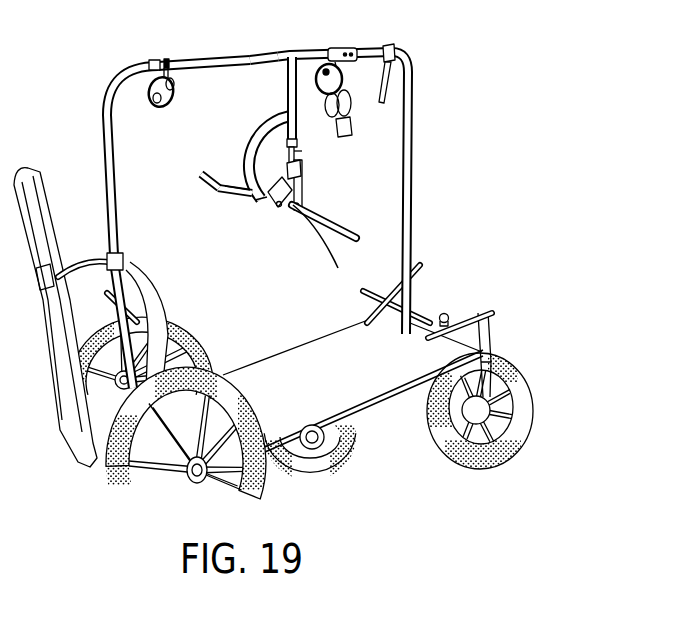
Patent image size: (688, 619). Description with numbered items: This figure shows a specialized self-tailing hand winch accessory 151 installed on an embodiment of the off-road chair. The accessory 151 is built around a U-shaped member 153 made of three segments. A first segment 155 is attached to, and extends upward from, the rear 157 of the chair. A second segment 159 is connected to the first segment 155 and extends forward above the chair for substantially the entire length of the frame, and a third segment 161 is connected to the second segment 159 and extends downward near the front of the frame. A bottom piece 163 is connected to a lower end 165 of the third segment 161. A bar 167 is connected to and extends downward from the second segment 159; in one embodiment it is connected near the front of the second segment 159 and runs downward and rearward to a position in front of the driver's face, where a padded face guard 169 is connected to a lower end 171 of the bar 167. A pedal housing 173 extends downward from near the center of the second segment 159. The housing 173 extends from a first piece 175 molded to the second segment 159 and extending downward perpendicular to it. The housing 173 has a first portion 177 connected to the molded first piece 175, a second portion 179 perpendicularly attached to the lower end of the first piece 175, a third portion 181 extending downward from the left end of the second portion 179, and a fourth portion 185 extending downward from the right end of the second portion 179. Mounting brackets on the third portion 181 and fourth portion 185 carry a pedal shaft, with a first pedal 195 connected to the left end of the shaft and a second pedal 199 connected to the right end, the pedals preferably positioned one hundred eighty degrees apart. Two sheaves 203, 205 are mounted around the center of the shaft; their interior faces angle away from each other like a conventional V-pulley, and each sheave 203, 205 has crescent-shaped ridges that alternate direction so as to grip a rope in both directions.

The accessory 151 is at (270, 27).
The U-shaped member 153 is at (283, 47).
The first segment 155 is at (100, 108).
The rear 157 is at (98, 242).
The second segment 159 is at (232, 60).
The third segment 161 is at (413, 103).
The bottom piece 163 is at (432, 311).
The lower end 165 is at (414, 294).
The bar 167 is at (298, 130).
The padded face guard 169 is at (258, 162).
The lower end 171 is at (278, 131).
The pedal housing 173 is at (300, 153).
The first piece 175 is at (287, 82).
The first portion 177 is at (303, 167).
The second portion 179 is at (304, 192).
The third portion 181 is at (216, 172).
The fourth portion 185 is at (330, 245).
The first pedal 195 is at (238, 196).
The second pedal 199 is at (350, 237).
The sheave 203 is at (273, 205).
The sheave 205 is at (281, 208).